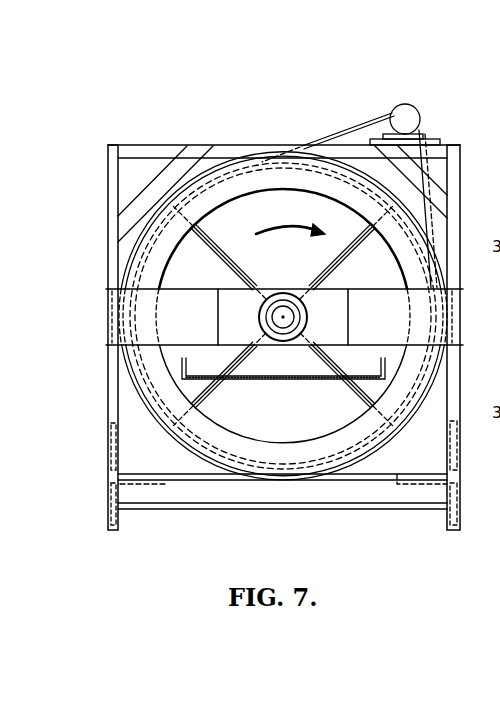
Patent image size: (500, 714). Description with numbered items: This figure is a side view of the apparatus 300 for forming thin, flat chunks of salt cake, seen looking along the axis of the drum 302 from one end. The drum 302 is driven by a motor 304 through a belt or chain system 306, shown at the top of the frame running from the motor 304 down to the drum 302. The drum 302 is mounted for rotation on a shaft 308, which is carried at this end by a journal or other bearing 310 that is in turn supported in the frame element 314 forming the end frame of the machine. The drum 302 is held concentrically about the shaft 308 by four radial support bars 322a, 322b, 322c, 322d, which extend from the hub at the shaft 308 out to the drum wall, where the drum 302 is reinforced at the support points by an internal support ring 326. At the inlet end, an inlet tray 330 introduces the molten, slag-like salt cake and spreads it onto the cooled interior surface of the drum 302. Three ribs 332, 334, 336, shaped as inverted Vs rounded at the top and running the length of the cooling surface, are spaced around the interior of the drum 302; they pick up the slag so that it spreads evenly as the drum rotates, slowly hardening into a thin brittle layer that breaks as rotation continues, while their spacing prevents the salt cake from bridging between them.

The apparatus 300 is at (457, 128).
The drum 302 is at (375, 446).
The motor 304 is at (407, 104).
The belt or chain system 306 is at (336, 125).
The shaft 308 is at (283, 308).
The bearing 310 is at (305, 313).
The frame element 314 is at (237, 146).
The radial support bar 322a is at (236, 264).
The radial support bar 322b is at (340, 263).
The radial support bar 322c is at (365, 392).
The radial support bar 322d is at (216, 390).
The internal support ring 326 is at (252, 462).
The inlet tray 330 is at (301, 377).
The rib 332 is at (266, 204).
The rib 334 is at (403, 348).
The rib 336 is at (194, 317).